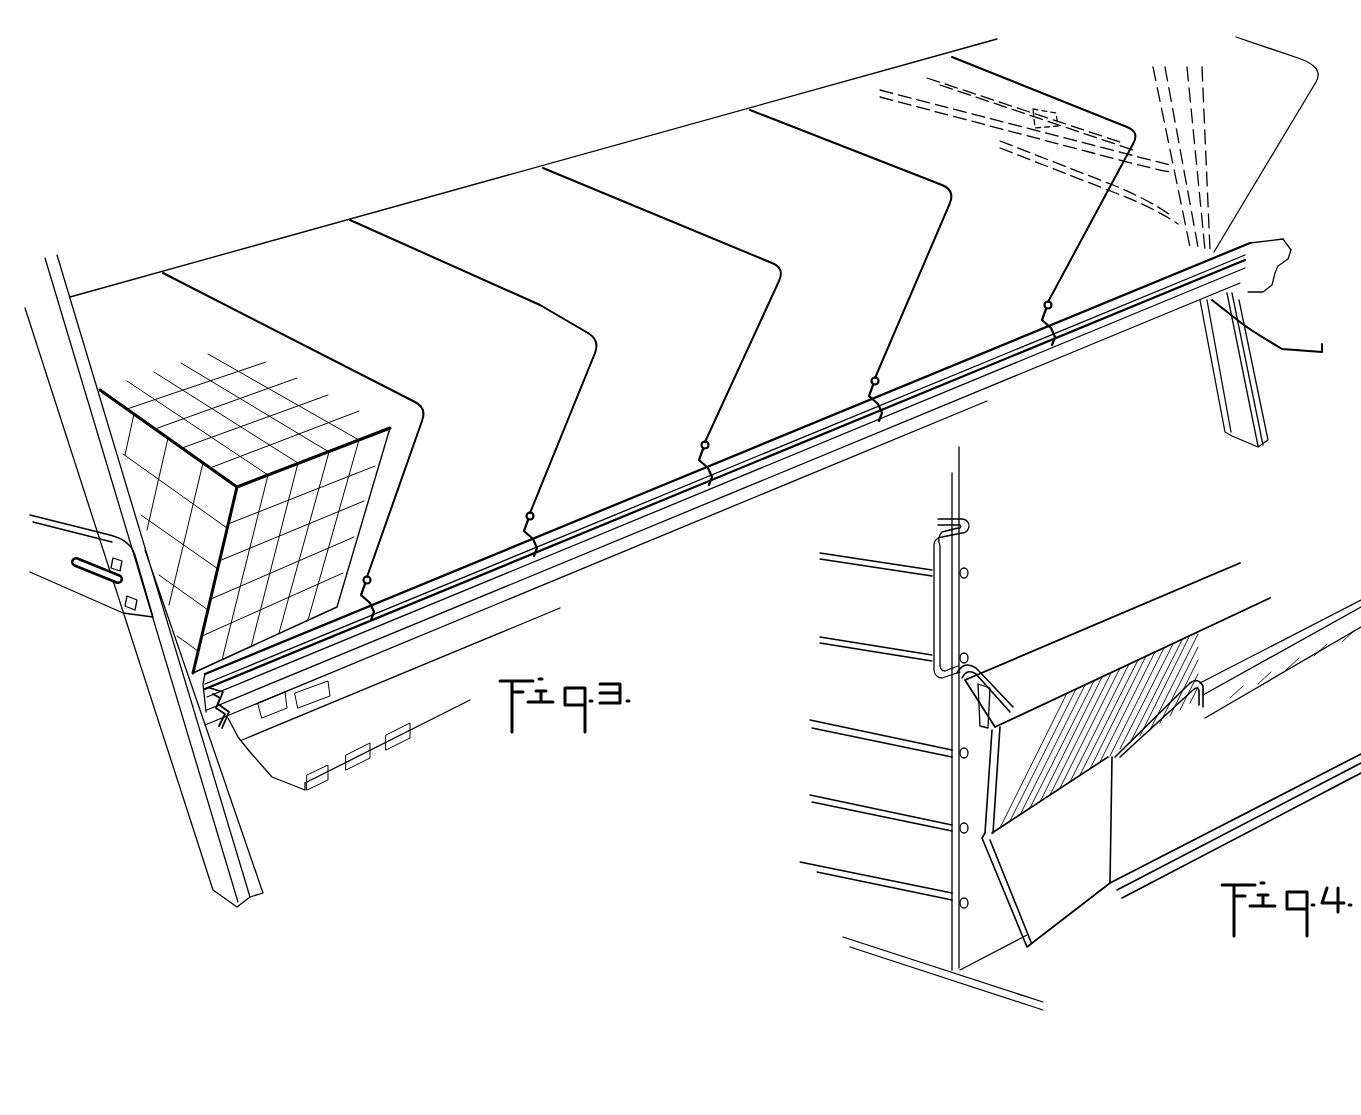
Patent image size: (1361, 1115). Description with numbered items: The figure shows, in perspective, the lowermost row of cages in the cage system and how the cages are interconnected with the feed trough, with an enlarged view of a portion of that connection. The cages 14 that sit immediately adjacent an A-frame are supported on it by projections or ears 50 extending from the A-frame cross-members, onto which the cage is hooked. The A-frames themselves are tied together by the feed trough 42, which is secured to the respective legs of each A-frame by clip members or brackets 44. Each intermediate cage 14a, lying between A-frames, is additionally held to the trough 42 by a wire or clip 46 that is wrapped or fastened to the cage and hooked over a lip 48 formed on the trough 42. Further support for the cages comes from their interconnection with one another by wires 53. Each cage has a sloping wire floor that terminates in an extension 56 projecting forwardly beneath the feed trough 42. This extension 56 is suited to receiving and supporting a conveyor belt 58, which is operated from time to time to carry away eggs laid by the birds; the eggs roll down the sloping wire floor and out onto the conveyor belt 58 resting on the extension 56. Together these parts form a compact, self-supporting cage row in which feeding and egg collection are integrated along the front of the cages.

In FIG. 3, the cage 14 is at (268, 356).
In FIG. 3, the intermediate cage 14a is at (505, 366).
In FIG. 4, the feed trough 42 is at (1234, 784).
In FIG. 3, the clip member or bracket 44 is at (222, 714).
In FIG. 3, the wire or clip 46 is at (373, 604).
In FIG. 4, the wire or clip 46 is at (977, 672).
In FIG. 3, the lip 48 is at (449, 577).
In FIG. 4, the lip 48 is at (1048, 658).
In FIG. 3, the projection or ear 50 is at (1050, 110).
In FIG. 3, the wire 53 is at (400, 503).
In FIG. 3, the extension 56 is at (254, 760).
In FIG. 3, the conveyor belt 58 is at (290, 752).